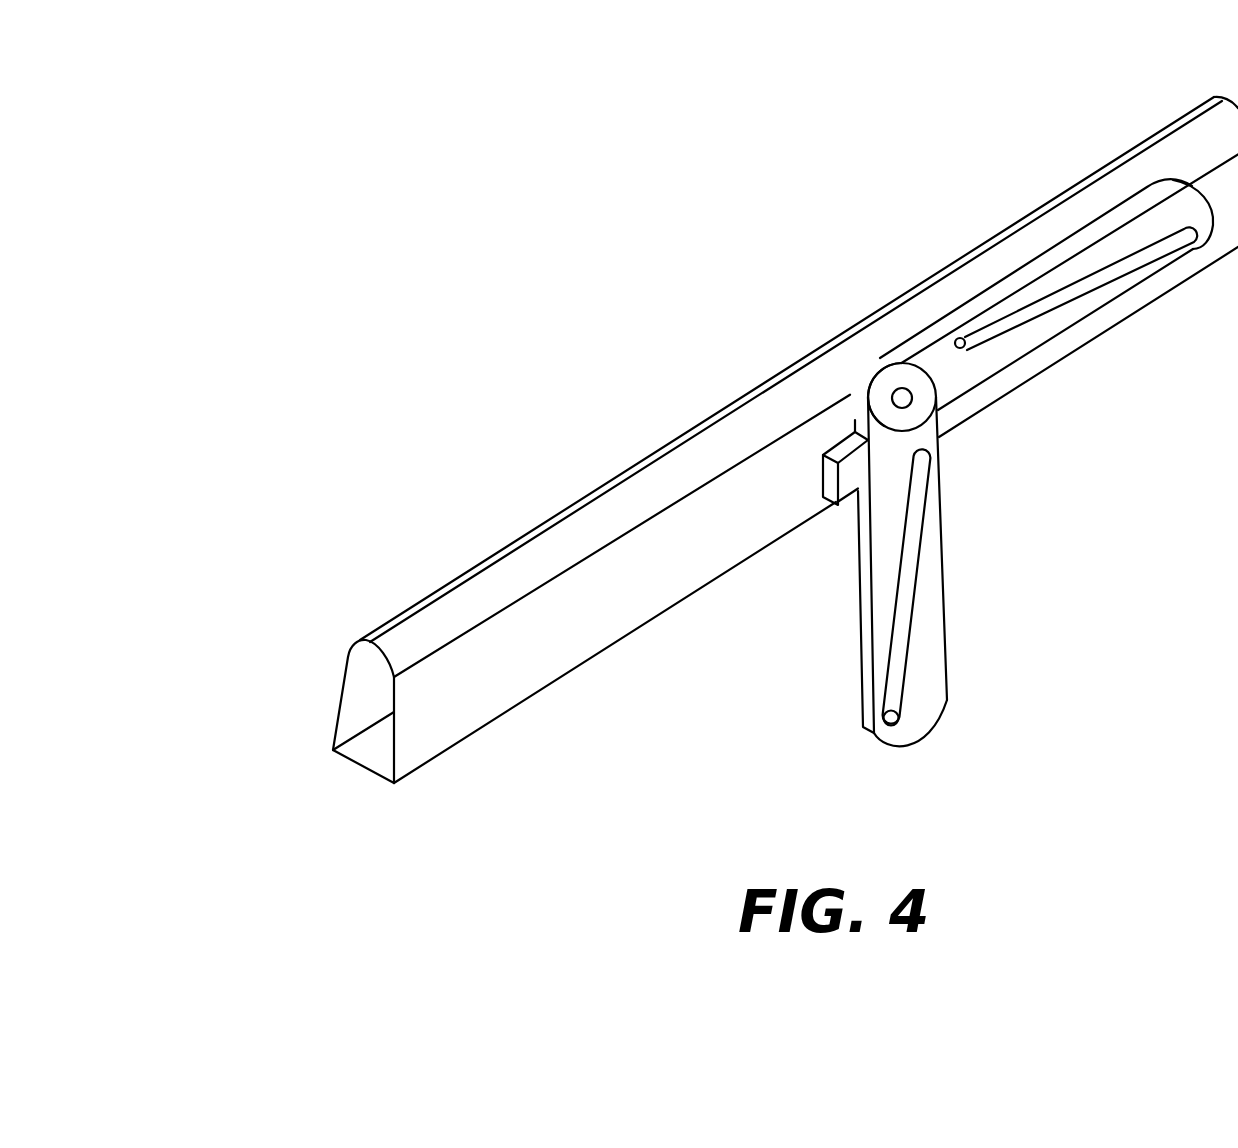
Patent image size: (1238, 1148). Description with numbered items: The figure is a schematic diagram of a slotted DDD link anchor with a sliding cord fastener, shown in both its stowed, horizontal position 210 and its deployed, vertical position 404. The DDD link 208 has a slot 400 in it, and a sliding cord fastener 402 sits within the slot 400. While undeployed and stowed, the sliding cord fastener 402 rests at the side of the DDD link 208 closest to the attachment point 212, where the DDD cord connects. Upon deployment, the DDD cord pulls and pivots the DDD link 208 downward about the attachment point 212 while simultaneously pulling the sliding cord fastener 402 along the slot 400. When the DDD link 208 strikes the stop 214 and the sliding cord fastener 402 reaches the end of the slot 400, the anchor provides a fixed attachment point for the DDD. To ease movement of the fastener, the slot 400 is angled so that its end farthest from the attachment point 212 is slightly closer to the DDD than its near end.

The DDD link 208 is at (858, 640).
The stowed, horizontal position 210 is at (1085, 247).
The attachment point 212 is at (905, 399).
The stop 214 is at (822, 455).
The slot 400 is at (1077, 297).
The sliding cord fastener 402 is at (957, 340).
The deployed, vertical position 404 is at (905, 745).